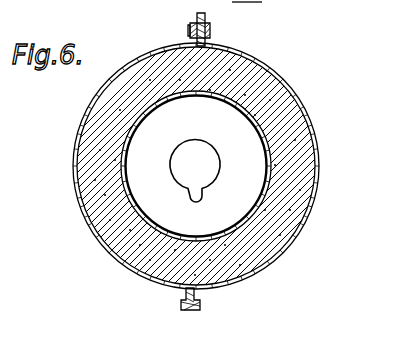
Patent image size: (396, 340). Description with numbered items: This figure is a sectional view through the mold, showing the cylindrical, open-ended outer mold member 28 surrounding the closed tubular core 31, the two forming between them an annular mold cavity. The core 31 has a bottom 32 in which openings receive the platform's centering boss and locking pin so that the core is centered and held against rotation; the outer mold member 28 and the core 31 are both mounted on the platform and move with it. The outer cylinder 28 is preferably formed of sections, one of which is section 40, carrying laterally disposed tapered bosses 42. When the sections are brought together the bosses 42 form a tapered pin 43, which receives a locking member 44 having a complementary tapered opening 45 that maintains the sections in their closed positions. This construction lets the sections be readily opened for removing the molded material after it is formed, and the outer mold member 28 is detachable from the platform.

The mold member 28 is at (77, 192).
The core 31 is at (260, 126).
The bottom 32 is at (204, 174).
The section 40 is at (287, 92).
The tapered boss 42 is at (201, 305).
The tapered pin 43 is at (203, 20).
The locking member 44 is at (211, 31).
The tapered opening 45 is at (188, 29).